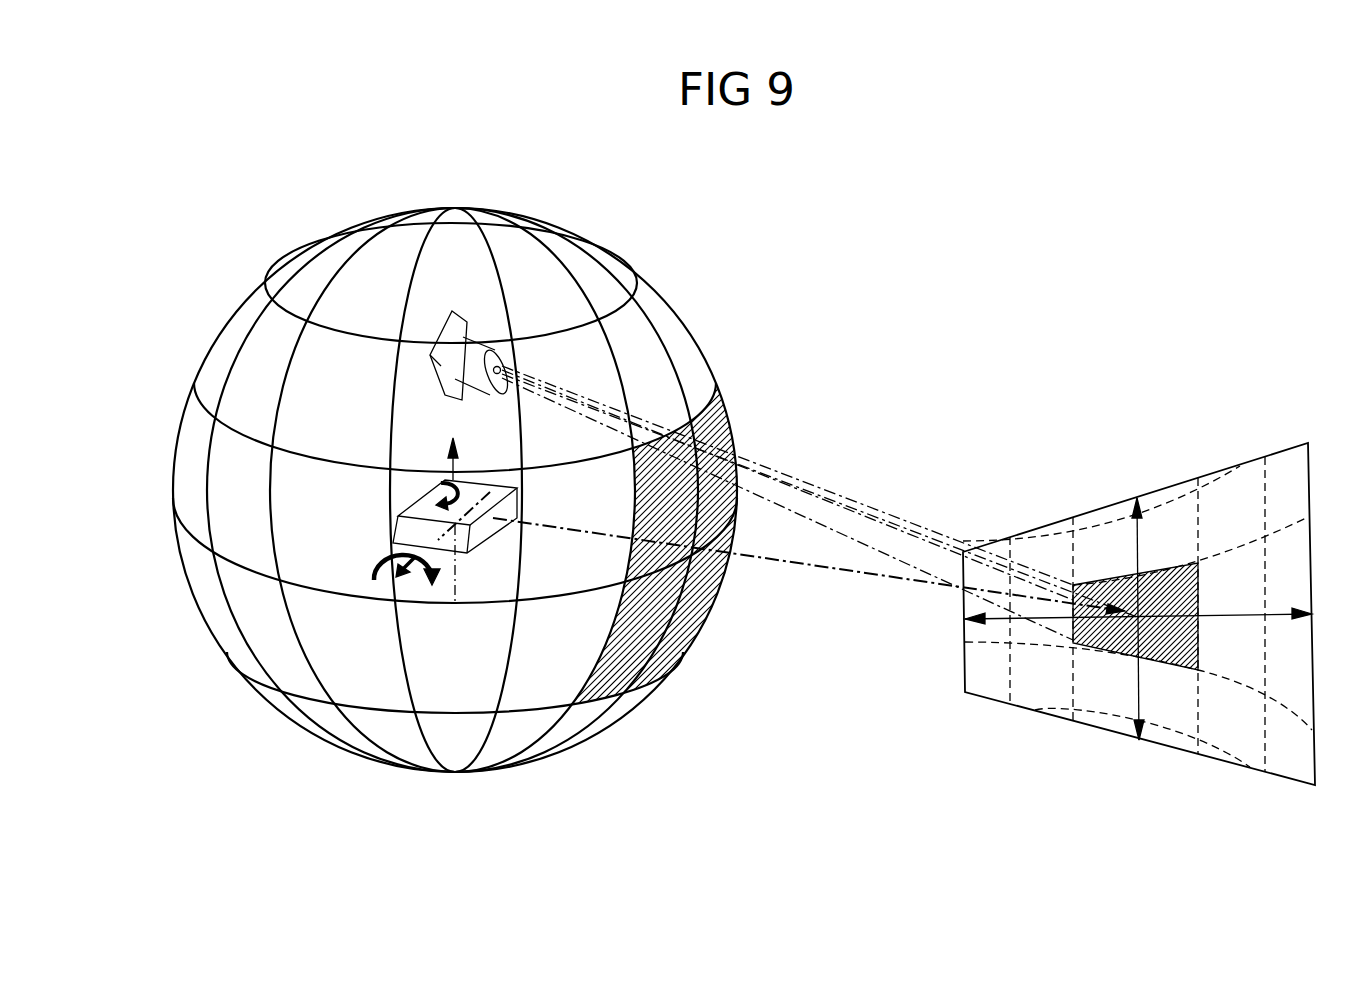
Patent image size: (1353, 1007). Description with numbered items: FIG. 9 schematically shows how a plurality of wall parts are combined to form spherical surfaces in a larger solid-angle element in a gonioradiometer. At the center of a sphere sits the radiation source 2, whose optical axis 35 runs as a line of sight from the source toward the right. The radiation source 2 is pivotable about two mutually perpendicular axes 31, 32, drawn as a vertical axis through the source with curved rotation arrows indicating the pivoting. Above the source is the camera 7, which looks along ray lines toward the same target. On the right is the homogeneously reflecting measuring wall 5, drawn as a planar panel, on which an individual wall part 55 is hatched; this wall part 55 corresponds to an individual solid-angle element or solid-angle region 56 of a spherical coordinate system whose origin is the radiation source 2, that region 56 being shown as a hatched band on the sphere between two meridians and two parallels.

The radiation source 2 is at (417, 497).
The camera 7 is at (518, 352).
The axis 32 is at (503, 478).
The axis 31 is at (460, 590).
The solid-angle region 56 is at (695, 637).
The optical axis 35 is at (812, 568).
The measuring wall 5 is at (1105, 732).
The wall part 55 is at (1197, 600).